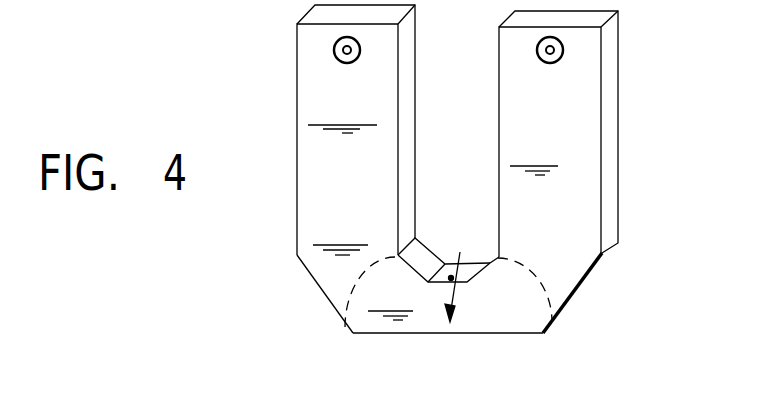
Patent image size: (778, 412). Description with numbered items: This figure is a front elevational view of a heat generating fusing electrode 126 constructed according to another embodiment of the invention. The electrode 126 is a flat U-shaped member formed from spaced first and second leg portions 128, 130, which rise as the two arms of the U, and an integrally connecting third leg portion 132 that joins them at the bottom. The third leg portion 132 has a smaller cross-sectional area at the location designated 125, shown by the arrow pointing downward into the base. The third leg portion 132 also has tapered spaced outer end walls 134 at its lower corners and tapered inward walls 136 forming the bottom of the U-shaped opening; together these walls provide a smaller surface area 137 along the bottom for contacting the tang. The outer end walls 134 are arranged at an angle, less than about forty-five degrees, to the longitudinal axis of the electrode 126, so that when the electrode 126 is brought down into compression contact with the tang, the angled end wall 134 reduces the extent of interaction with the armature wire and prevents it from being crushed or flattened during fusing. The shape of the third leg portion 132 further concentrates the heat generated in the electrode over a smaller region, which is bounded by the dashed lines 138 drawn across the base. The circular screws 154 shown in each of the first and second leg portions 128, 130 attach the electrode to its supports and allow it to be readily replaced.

The location of smaller cross-sectional area 125 is at (463, 275).
The electrode 126 is at (624, 90).
The first leg portion 128 is at (323, 145).
The second leg portion 130 is at (593, 172).
The third leg portion 132 is at (490, 312).
The tapered outer end walls 134 is at (355, 282).
The tapered inward walls 136 is at (412, 265).
The smaller surface area 137 is at (413, 335).
The dashed lines 138 is at (345, 290).
The screws 154 is at (342, 63).